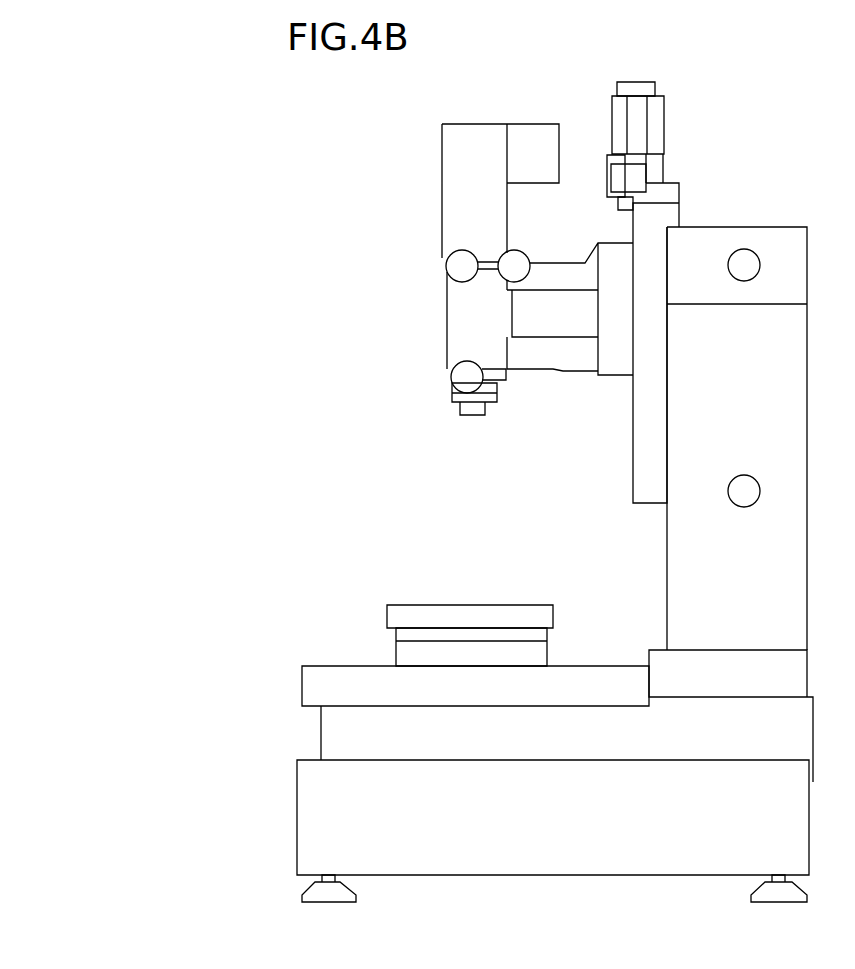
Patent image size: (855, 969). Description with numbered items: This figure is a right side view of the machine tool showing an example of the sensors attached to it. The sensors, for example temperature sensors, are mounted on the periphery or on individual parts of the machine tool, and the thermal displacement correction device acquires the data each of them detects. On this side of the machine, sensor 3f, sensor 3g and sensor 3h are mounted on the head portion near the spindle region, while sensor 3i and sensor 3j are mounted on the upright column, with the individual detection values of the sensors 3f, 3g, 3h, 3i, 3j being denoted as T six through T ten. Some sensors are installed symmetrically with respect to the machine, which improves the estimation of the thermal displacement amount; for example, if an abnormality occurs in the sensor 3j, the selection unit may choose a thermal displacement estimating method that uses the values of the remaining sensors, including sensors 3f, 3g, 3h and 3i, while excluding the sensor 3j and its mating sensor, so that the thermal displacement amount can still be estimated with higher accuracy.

The sensor 3f is at (446, 263).
The sensor 3g is at (451, 377).
The sensor 3h is at (507, 253).
The sensor 3i is at (755, 253).
The sensor 3j is at (728, 497).